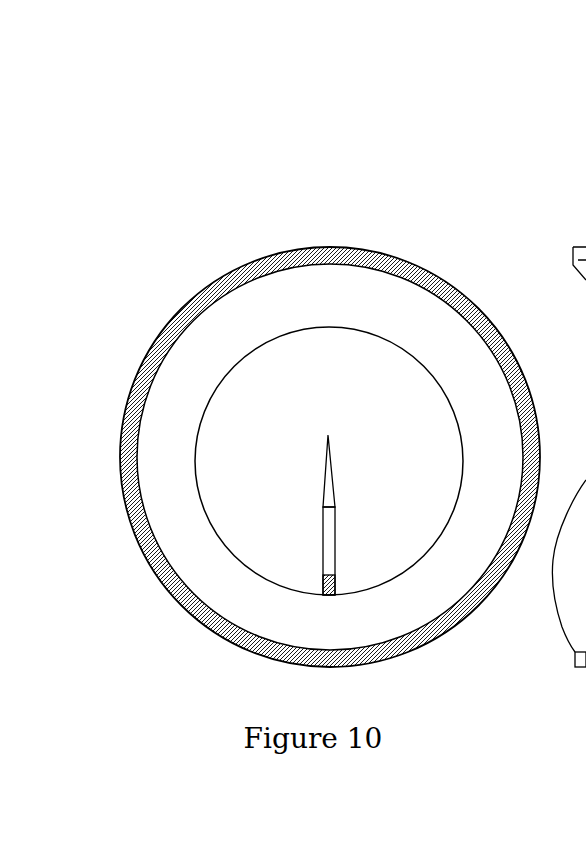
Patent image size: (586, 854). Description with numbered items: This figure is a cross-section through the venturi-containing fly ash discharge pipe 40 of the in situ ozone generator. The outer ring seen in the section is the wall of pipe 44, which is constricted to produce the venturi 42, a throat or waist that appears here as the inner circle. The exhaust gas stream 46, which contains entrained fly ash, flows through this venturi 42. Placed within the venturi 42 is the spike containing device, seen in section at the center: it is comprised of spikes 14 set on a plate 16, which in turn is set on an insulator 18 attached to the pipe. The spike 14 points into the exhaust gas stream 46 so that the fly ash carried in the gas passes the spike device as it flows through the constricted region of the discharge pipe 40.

The venturi-containing fly ash discharge pipe 40 is at (391, 206).
The venturi 42 is at (319, 307).
The pipe 44 is at (448, 271).
The exhaust gas stream 46 is at (282, 406).
The spikes 14 is at (348, 451).
The plate 16 is at (348, 544).
The insulator 18 is at (345, 599).